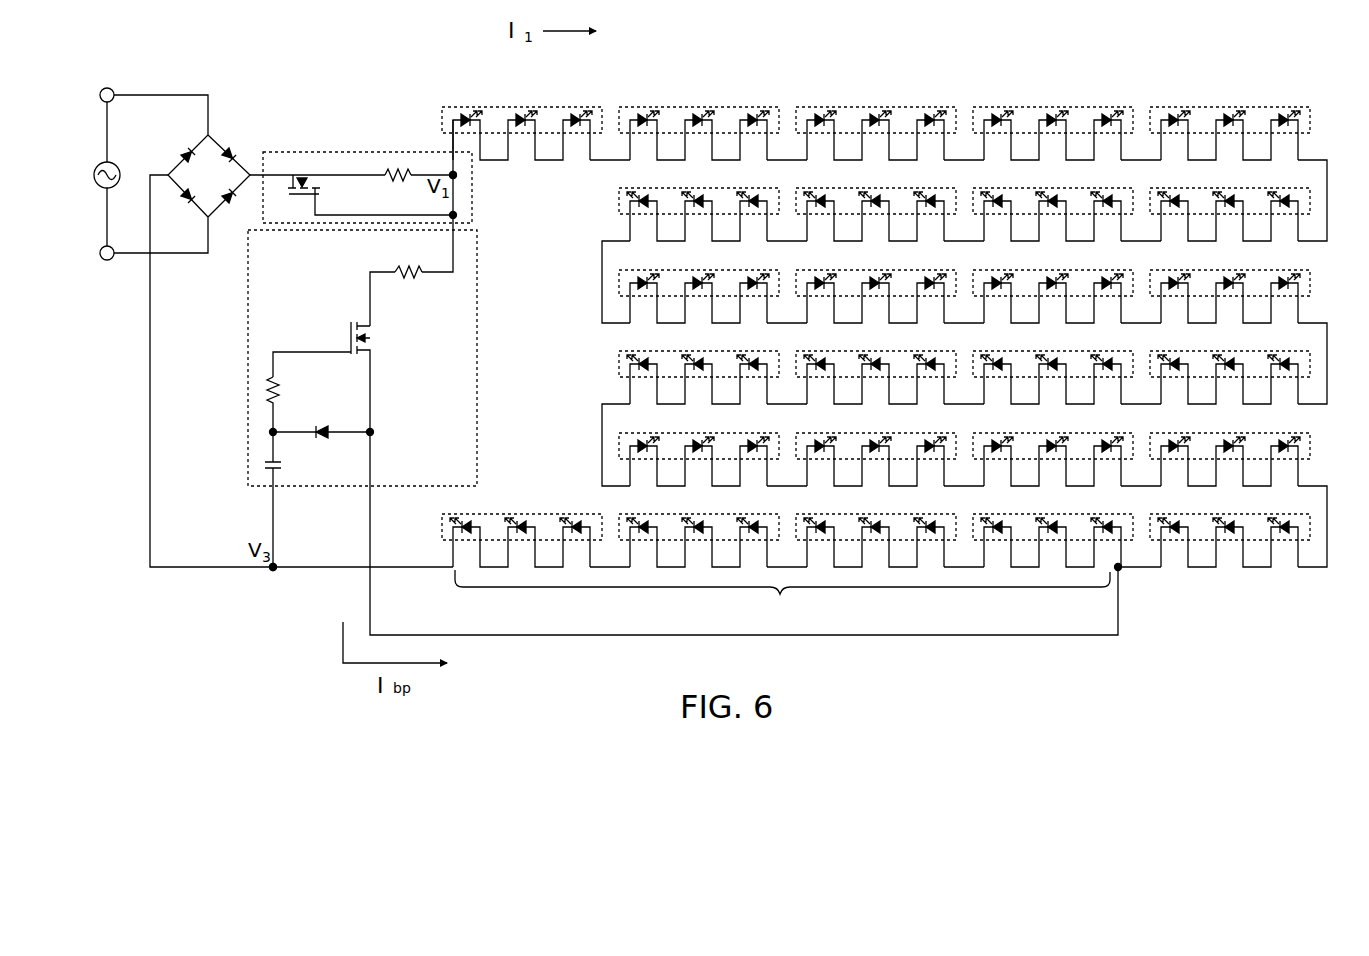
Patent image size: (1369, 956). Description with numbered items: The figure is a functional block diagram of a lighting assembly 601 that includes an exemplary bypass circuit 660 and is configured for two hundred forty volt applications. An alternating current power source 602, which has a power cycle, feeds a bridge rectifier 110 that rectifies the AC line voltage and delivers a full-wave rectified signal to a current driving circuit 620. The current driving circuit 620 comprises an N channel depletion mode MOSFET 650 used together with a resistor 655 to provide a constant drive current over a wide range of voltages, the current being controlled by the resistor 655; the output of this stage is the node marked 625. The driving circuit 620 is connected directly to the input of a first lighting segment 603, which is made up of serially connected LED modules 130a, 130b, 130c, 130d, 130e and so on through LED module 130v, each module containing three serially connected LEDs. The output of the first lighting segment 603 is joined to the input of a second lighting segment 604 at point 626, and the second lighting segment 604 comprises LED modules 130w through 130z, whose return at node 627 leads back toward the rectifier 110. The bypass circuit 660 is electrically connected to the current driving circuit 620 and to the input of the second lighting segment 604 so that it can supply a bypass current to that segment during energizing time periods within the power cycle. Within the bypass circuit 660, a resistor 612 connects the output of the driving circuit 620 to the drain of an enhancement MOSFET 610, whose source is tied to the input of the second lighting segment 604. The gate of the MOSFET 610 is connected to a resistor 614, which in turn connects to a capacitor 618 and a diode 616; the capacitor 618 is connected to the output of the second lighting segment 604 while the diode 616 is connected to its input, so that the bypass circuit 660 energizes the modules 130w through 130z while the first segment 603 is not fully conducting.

The lighting assembly 601 is at (832, 37).
The alternating current power source 602 is at (110, 162).
The first lighting segment 603 is at (1128, 67).
The second lighting segment 604 is at (782, 597).
The bridge rectifier 110 is at (215, 133).
The current driving circuit 620 is at (367, 144).
The N channel depletion mode MOSFET 650 is at (303, 174).
The resistor 655 is at (394, 163).
The node V1 625 is at (453, 175).
The bypass circuit 660 is at (336, 391).
The resistor 612 is at (408, 285).
The enhanced MOSFET 610 is at (350, 340).
The resistor 614 is at (265, 395).
The diode 616 is at (330, 434).
The capacitor 618 is at (265, 470).
The node V3 627 is at (273, 570).
The point 626 is at (1118, 569).
The LED module 130a is at (530, 105).
The LED module 130b is at (700, 105).
The LED module 130c is at (887, 105).
The LED module 130d is at (1065, 105).
The LED module 130e is at (1207, 105).
The LED module 130z is at (506, 513).
The LED module 130w is at (1052, 543).
The LED module 130v is at (1282, 543).